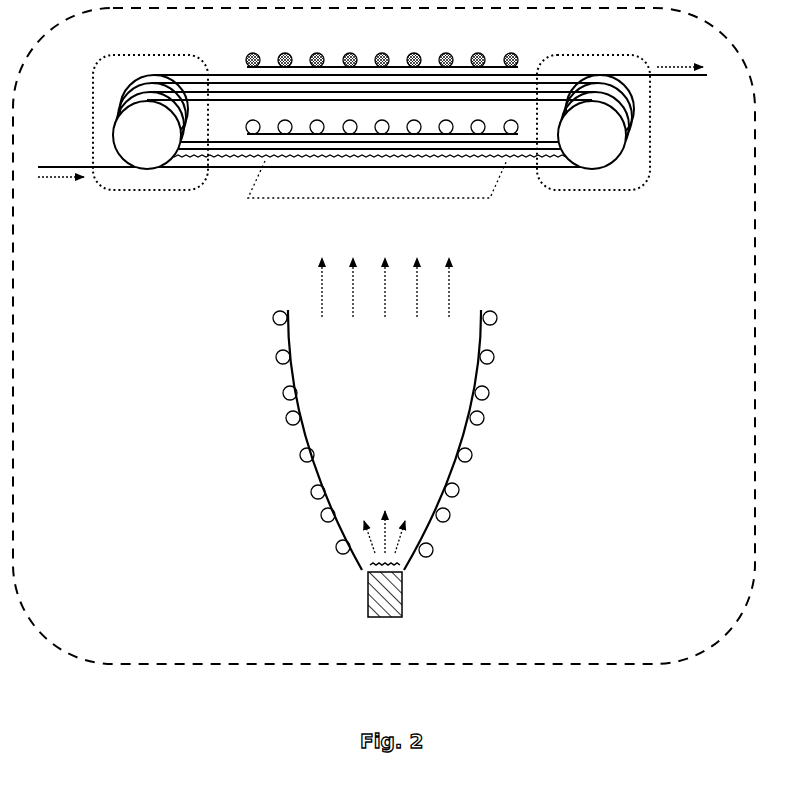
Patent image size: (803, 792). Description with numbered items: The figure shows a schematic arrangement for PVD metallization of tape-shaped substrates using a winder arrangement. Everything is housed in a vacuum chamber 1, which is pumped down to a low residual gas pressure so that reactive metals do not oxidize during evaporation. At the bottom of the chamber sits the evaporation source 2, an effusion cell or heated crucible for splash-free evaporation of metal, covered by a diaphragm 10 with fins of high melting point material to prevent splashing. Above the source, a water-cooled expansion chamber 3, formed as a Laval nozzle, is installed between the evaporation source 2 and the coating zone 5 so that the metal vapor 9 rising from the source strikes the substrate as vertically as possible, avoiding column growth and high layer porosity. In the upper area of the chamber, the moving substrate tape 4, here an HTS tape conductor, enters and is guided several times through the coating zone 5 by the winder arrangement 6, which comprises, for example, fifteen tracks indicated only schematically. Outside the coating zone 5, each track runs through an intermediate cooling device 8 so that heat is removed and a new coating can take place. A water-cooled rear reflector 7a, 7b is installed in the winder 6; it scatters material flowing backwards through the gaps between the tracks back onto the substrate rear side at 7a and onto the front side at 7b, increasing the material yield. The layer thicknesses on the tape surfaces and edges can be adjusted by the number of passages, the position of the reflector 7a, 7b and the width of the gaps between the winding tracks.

The vacuum chamber 1 is at (384, 336).
The evaporation source 2 is at (385, 614).
The expansion chamber 3 is at (385, 440).
The moving substrate tape 4 is at (61, 161).
The coating zone 5 is at (377, 192).
The winder arrangement 6 is at (372, 117).
The water-cooled rear reflector 7a is at (366, 128).
The water-cooled rear reflector 7b is at (366, 56).
The intermediate cooling device 8 is at (371, 106).
The metal vapor 9 is at (385, 405).
The diaphragm 10 is at (409, 571).